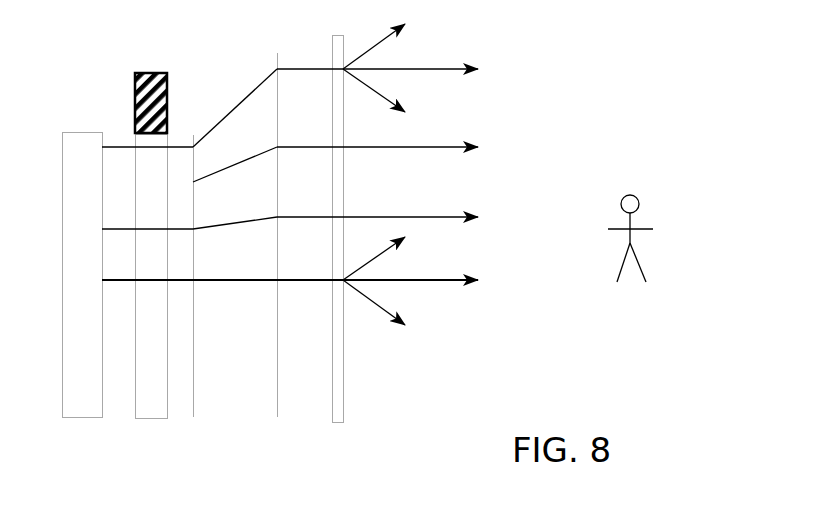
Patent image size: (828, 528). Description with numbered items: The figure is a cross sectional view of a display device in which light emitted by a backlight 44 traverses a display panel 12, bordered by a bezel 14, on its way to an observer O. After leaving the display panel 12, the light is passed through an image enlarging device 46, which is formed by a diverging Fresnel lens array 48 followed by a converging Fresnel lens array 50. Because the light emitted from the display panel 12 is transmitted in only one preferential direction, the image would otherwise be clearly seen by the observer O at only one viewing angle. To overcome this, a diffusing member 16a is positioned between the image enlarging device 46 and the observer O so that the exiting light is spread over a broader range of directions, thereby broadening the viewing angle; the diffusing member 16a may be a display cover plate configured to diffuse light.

The backlight 44 is at (73, 131).
The display panel 12 is at (150, 419).
The bezel 14 is at (169, 90).
The diverging Fresnel lens array 48 is at (193, 404).
The converging Fresnel lens array 50 is at (277, 400).
The image enlarging device 46 is at (283, 463).
The diffusing member 16a is at (345, 407).
The observer O is at (661, 209).